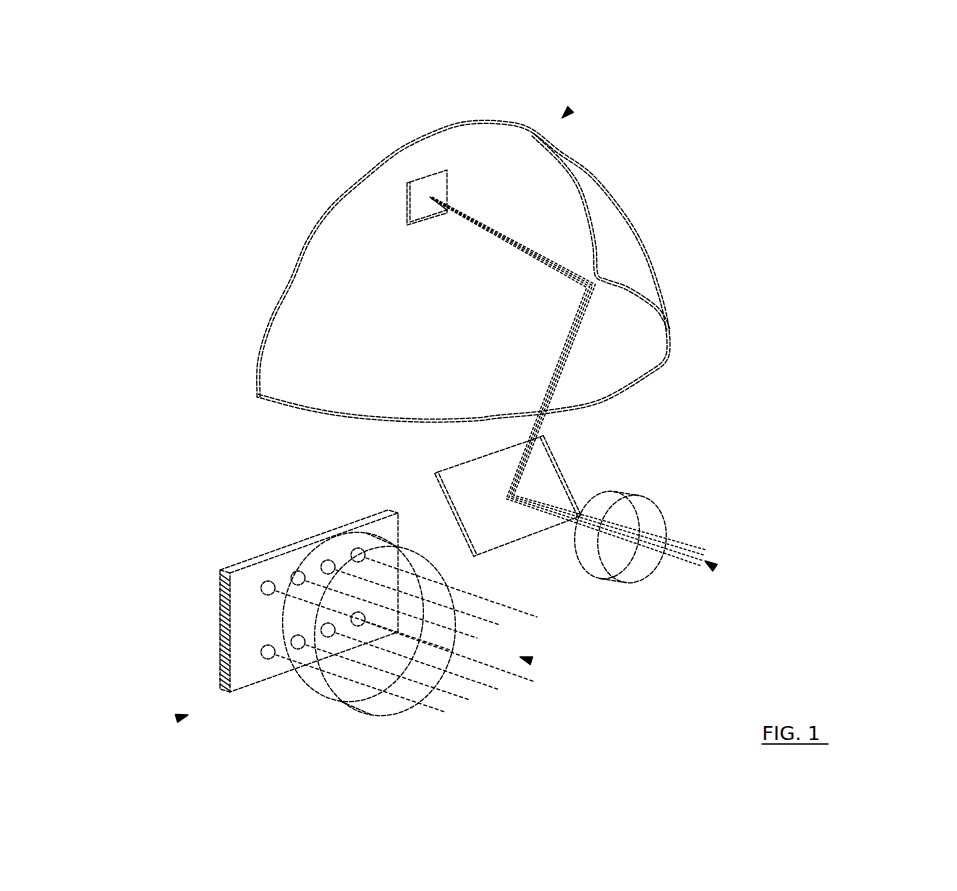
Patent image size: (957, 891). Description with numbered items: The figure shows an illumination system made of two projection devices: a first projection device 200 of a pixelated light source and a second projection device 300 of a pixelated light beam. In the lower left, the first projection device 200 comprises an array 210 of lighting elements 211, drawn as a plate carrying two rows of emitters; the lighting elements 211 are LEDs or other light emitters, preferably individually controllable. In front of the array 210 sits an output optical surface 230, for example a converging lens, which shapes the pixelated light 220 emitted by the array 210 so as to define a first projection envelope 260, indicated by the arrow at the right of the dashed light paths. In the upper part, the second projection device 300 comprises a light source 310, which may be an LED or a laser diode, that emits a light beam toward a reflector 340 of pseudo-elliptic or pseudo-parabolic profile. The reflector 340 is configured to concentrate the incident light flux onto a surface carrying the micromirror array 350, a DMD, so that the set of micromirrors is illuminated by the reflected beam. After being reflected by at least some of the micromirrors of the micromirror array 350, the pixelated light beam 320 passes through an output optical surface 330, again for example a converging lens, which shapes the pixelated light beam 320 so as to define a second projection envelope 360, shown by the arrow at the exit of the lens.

The first projection device 200 is at (188, 715).
The array of lighting elements 210 is at (243, 622).
The lighting elements 211 is at (266, 659).
The pixelated light 220 is at (442, 693).
The output optical surface 230 is at (321, 691).
The first projection envelope 260 is at (520, 657).
The second projection device 300 is at (562, 118).
The light source 310 is at (430, 182).
The pixelated light beam 320 is at (672, 562).
The output optical surface 330 is at (640, 511).
The reflector 340 is at (330, 290).
The micromirror array 350 is at (556, 468).
The second projection envelope 360 is at (705, 561).